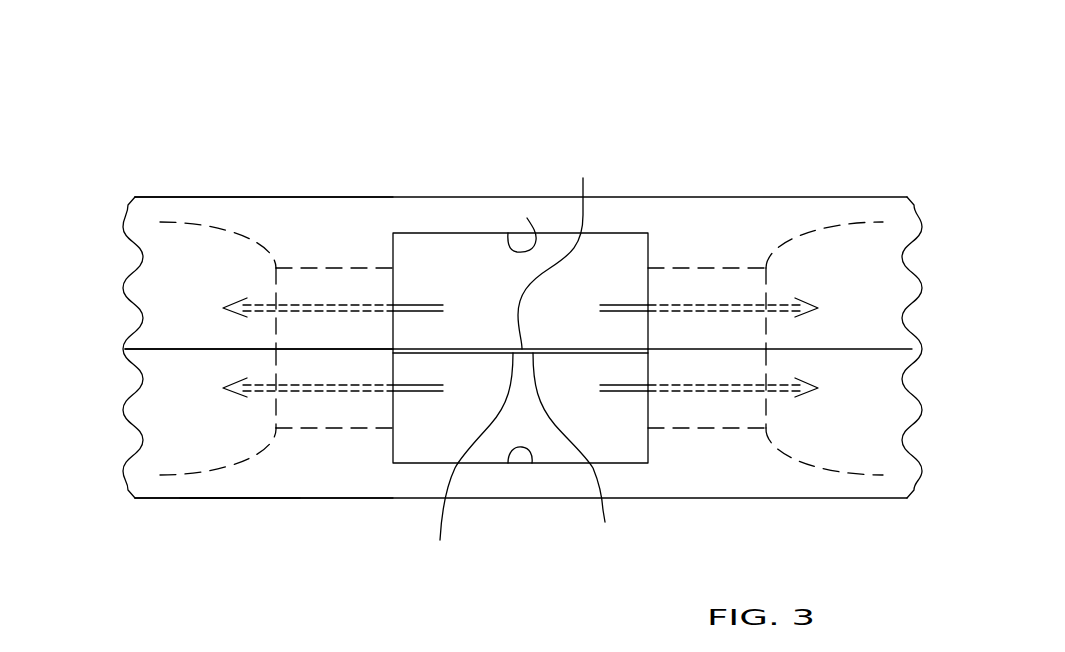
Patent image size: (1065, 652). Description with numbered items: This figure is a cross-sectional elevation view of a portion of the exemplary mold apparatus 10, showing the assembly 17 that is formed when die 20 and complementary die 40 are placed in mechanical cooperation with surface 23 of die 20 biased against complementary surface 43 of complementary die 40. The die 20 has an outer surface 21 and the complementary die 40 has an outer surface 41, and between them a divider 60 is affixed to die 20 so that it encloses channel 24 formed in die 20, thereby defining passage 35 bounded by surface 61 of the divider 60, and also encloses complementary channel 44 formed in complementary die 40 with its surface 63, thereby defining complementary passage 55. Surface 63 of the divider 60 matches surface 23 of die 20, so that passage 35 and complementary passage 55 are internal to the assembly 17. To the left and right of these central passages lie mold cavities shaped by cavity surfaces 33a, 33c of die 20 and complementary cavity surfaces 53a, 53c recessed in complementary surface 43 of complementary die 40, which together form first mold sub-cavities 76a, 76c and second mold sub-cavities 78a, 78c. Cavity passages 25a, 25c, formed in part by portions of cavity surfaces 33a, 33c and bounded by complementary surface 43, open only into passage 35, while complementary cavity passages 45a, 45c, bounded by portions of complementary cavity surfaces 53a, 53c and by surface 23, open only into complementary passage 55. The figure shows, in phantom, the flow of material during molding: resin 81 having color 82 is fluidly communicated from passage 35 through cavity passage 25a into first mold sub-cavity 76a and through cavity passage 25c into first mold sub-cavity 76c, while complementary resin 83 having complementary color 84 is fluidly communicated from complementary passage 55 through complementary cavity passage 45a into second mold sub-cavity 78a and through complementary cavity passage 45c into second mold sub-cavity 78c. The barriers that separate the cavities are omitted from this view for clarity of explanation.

The mold apparatus 10 is at (138, 63).
The assembly 17 is at (880, 197).
The die 20 is at (167, 488).
The surface 21 is at (217, 498).
The surface 23 is at (178, 349).
The channel 24 is at (532, 463).
The cavity passage 25a is at (338, 413).
The cavity passage 25c is at (708, 415).
The cavity surface 33a is at (250, 452).
The cavity surface 33c is at (833, 475).
The passage 35 is at (493, 418).
The complementary die 40 is at (165, 205).
The surface 41 is at (210, 197).
The complementary surface 43 is at (162, 349).
The complementary channel 44 is at (527, 218).
The complementary cavity passage 45a is at (335, 283).
The complementary cavity passage 45c is at (692, 287).
The complementary cavity surface 53a is at (248, 240).
The complementary cavity surface 53c is at (821, 225).
The complementary passage 55 is at (505, 300).
The divider 60 is at (577, 450).
The surface 61 is at (470, 460).
The surface 63 is at (558, 250).
The first mold sub-cavity 76a is at (202, 428).
The first mold sub-cavity 76c is at (885, 428).
The second mold sub-cavity 78a is at (210, 278).
The second mold sub-cavity 78c is at (885, 278).
The resin 81 is at (417, 385).
The color 82 is at (403, 392).
The complementary resin 83 is at (412, 305).
The complementary color 84 is at (407, 312).